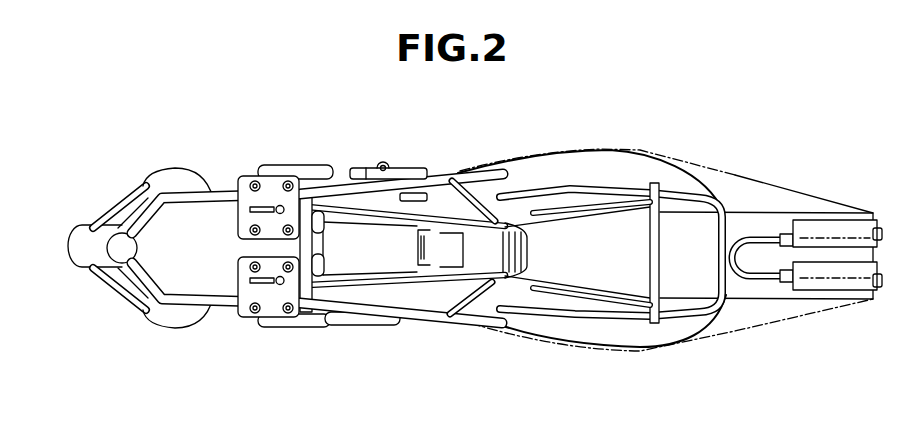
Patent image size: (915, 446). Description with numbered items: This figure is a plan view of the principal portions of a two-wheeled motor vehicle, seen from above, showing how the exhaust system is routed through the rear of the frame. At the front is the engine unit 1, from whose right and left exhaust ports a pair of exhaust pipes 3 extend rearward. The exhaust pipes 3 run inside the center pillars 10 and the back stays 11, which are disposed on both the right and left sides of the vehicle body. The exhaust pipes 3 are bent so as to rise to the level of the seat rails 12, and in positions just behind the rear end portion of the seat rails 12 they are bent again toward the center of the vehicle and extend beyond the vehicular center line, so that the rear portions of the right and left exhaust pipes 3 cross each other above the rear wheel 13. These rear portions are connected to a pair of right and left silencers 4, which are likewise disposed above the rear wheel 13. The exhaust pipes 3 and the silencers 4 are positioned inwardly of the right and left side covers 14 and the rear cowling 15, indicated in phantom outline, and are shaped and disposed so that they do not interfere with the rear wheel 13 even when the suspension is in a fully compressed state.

The engine unit 1 is at (272, 311).
The exhaust pipes 3 is at (549, 163).
The silencers 4 is at (842, 226).
The center pillars 10 is at (432, 180).
The back stays 11 is at (506, 213).
The seat rails 12 is at (589, 210).
The rear wheel 13 is at (694, 288).
The side covers 14 is at (611, 152).
The rear cowling 15 is at (731, 330).